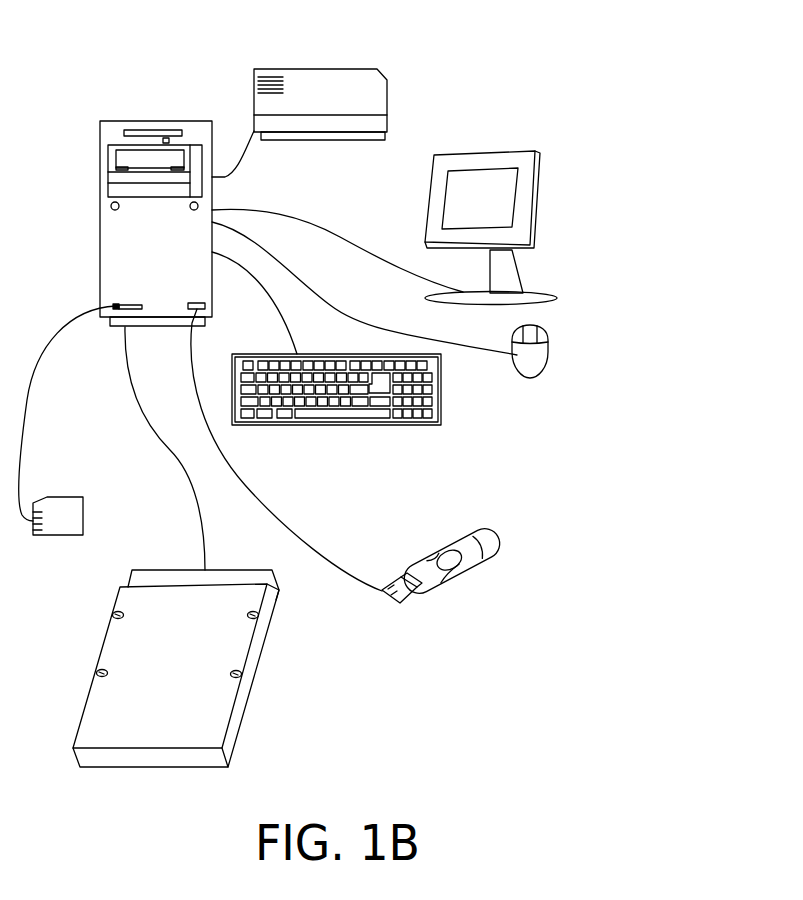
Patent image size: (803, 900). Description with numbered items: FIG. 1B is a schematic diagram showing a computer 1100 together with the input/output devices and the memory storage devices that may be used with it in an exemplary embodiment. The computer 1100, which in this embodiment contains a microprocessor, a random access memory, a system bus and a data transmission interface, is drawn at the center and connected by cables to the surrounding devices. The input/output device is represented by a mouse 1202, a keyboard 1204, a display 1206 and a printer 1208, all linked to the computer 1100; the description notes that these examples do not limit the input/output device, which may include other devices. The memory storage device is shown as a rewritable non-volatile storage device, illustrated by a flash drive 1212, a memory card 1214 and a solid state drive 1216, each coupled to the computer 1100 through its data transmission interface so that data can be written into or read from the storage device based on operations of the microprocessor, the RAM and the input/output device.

The computer 1100 is at (158, 121).
The mouse 1202 is at (548, 352).
The keyboard 1204 is at (441, 402).
The display 1206 is at (493, 150).
The printer 1208 is at (318, 69).
The flash drive 1212 is at (433, 553).
The memory card 1214 is at (83, 505).
The solid state drive 1216 is at (227, 558).